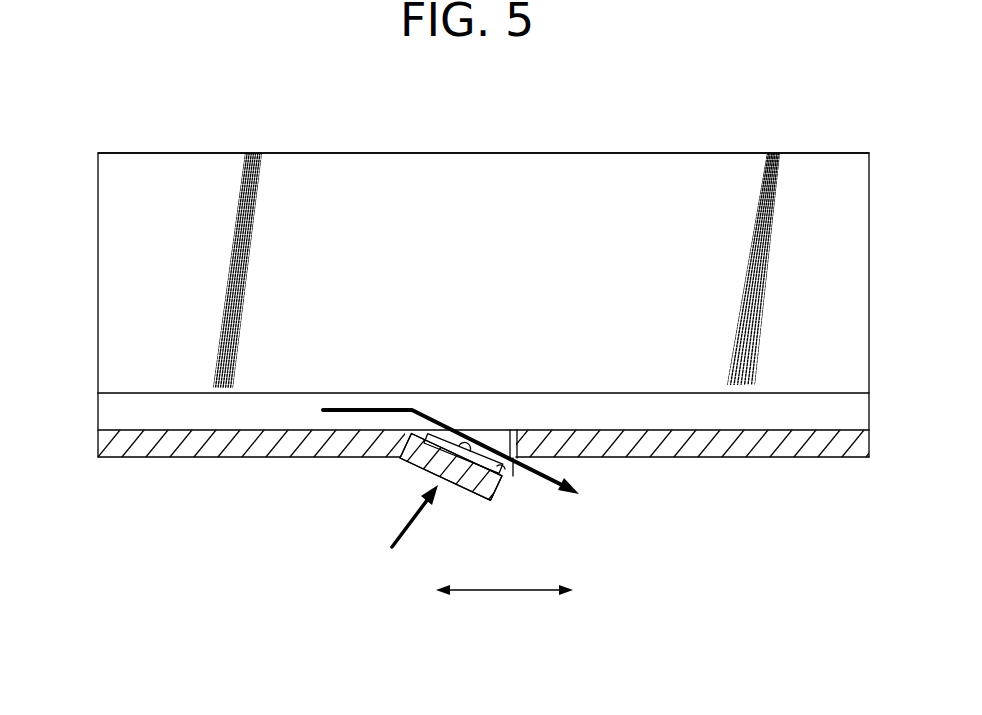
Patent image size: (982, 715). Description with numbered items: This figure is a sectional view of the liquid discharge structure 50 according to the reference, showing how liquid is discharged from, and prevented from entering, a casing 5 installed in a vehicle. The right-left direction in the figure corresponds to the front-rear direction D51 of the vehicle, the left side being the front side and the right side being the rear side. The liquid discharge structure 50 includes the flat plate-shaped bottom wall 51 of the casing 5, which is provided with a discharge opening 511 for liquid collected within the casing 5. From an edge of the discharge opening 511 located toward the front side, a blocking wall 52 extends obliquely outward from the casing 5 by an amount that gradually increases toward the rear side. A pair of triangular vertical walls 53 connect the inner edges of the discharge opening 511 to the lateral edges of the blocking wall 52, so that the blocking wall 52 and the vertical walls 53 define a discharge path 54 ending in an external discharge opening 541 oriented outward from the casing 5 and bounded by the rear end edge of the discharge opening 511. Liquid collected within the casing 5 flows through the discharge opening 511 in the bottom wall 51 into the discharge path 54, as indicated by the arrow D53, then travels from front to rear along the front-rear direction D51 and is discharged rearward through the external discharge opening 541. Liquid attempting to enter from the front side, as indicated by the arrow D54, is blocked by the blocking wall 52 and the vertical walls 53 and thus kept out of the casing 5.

The casing 5 is at (488, 134).
The liquid discharge structure 50 is at (125, 477).
The bottom wall 51 is at (846, 458).
The discharge opening 511 is at (500, 430).
The blocking wall 52 is at (405, 468).
The vertical walls 53 is at (487, 440).
The discharge path 54 is at (462, 490).
The external discharge opening 541 is at (513, 476).
The front-rear direction D51 is at (505, 592).
The arrow D53 is at (372, 410).
The arrow D54 is at (407, 510).